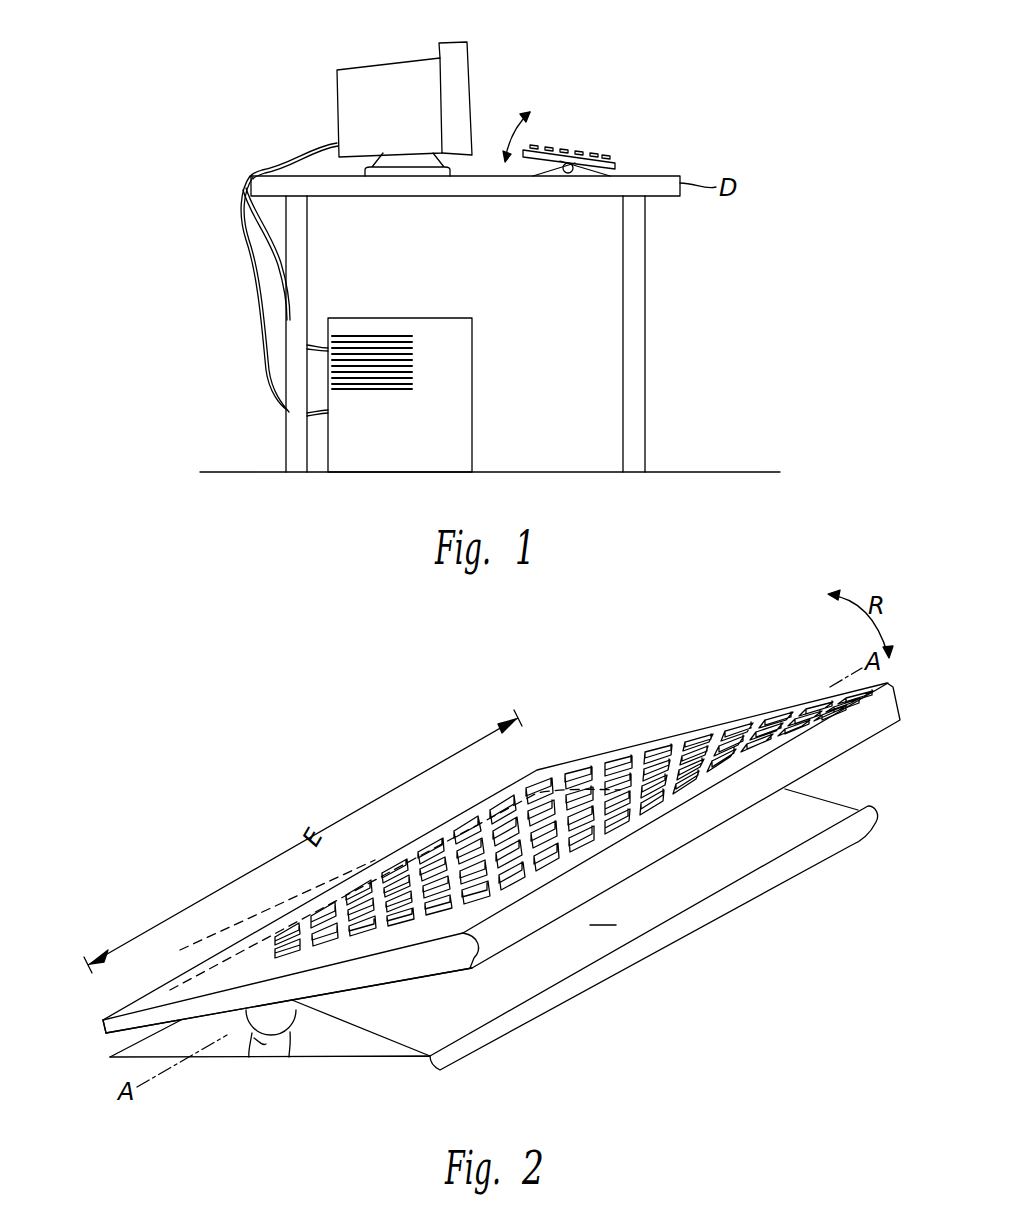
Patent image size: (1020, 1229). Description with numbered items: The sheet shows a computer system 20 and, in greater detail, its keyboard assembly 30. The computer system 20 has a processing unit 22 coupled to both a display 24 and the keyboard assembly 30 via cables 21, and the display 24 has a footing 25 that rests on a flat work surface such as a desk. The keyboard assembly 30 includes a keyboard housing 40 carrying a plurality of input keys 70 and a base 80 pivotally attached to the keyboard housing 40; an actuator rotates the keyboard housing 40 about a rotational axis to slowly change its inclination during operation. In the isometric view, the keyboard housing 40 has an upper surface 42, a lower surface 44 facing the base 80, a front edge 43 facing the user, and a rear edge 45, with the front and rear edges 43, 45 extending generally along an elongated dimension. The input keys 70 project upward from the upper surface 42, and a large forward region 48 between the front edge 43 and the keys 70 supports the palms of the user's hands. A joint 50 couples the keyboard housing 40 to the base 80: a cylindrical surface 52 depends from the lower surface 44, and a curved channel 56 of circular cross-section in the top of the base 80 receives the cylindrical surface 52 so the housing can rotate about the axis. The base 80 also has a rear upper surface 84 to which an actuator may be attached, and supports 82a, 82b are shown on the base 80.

In FIG. 1, the computer system 20 is at (327, 98).
In FIG. 1, the cables 21 is at (262, 268).
In FIG. 1, the processing unit 22 is at (467, 348).
In FIG. 1, the display 24 is at (465, 57).
In FIG. 1, the footing 25 is at (412, 167).
In FIG. 1, the keyboard assembly 30 is at (597, 140).
In FIG. 2, the keyboard assembly 30 is at (507, 935).
In FIG. 1, the keyboard housing 40 is at (615, 166).
In FIG. 2, the keyboard housing 40 is at (770, 808).
In FIG. 2, the upper surface 42 is at (154, 998).
In FIG. 2, the front edge 43 is at (103, 1034).
In FIG. 2, the lower surface 44 is at (402, 985).
In FIG. 2, the rear edge 45 is at (470, 950).
In FIG. 2, the forward region 48 is at (370, 866).
In FIG. 2, the joint 50 is at (227, 1045).
In FIG. 2, the cylindrical surface 52 is at (296, 1010).
In FIG. 2, the curved channel 56 is at (287, 1050).
In FIG. 1, the input keys 70 is at (568, 150).
In FIG. 2, the input keys 70 is at (633, 752).
In FIG. 1, the base 80 is at (563, 177).
In FIG. 2, the base 80 is at (548, 1000).
In FIG. 2, the support wedge 82a is at (381, 1058).
In FIG. 2, the support wedge 82b is at (820, 796).
In FIG. 2, the rear upper surface 84 is at (605, 914).